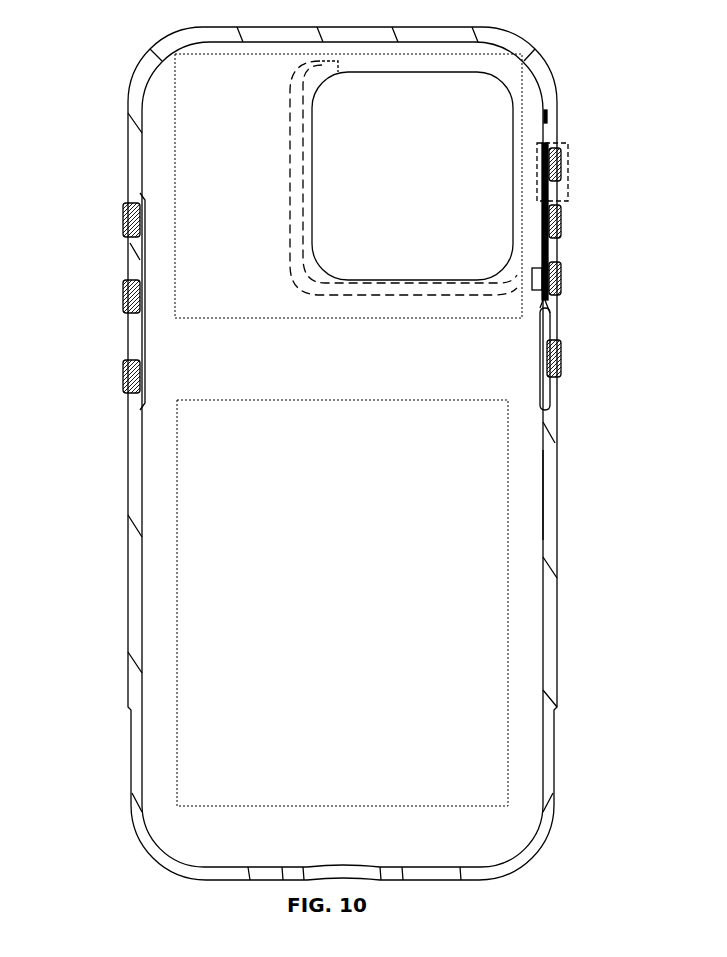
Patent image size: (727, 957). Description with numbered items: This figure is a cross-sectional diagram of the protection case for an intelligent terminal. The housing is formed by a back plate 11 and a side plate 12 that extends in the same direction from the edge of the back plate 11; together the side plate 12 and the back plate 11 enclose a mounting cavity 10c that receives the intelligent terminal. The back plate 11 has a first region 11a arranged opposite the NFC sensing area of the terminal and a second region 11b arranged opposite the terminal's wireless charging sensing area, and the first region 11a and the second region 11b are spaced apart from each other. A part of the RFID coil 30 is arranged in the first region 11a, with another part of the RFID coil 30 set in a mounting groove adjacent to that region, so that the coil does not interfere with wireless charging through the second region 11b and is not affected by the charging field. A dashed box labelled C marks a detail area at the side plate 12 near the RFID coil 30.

The mounting cavity 10c is at (523, 502).
The back plate 11 is at (527, 650).
The first region 11a is at (175, 163).
The second region 11b is at (177, 450).
The side plate 12 is at (520, 48).
The RFID coil 30 is at (545, 278).
The region C is at (568, 153).